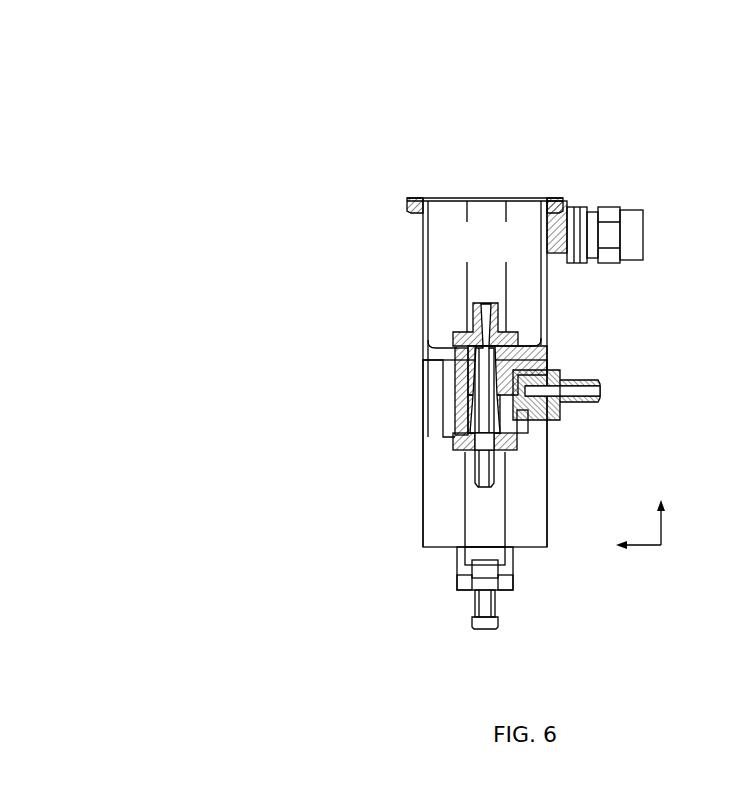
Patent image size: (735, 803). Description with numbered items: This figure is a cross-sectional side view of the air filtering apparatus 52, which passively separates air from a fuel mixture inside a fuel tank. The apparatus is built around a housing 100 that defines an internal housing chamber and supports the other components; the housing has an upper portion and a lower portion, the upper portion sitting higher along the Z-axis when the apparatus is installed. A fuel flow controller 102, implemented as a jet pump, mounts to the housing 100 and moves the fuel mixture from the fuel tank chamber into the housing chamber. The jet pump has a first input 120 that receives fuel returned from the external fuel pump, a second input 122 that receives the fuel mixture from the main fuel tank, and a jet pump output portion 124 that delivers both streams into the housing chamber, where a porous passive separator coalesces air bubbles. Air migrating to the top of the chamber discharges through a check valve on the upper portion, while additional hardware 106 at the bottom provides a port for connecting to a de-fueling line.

The air filtering apparatus 52 is at (417, 76).
The housing 100 is at (548, 432).
The fuel flow controller 102 is at (528, 309).
The additional hardware 106 is at (503, 641).
The first input 120 is at (496, 463).
The second input 122 is at (571, 406).
The jet pump output portion 124 is at (500, 317).